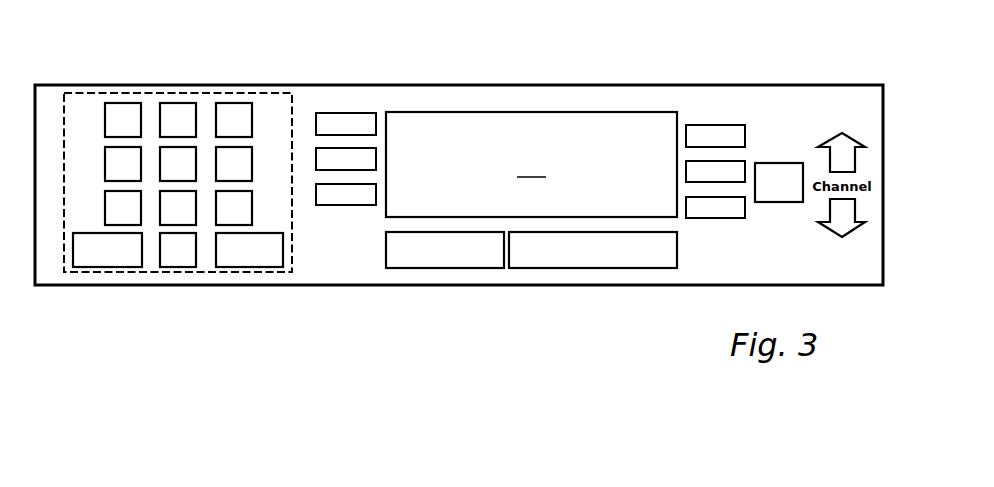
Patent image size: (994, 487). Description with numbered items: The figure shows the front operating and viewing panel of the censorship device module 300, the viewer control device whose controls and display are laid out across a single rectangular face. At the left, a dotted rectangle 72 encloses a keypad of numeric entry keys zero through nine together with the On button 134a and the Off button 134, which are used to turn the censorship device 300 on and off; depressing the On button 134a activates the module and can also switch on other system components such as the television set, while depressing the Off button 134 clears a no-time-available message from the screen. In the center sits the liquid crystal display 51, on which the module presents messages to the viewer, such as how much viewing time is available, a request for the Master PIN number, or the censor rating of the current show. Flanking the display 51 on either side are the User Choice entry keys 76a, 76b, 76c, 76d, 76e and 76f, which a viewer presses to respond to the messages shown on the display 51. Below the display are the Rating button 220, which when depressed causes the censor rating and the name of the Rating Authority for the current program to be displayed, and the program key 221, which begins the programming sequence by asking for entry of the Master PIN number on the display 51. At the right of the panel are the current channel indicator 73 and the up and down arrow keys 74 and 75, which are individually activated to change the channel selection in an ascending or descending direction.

The censorship device module 300 is at (542, 84).
The dotted rectangle 72 is at (150, 94).
The On button 134a is at (110, 262).
The Off button 134 is at (250, 260).
The User Choice entry key 76a is at (346, 124).
The User Choice entry key 76b is at (346, 159).
The User Choice entry key 76c is at (346, 194).
The User Choice entry key 76d is at (715, 136).
The User Choice entry key 76e is at (715, 171).
The User Choice entry key 76f is at (715, 207).
The liquid crystal display 51 is at (531, 164).
The Rating Button 220 is at (430, 260).
The program key 221 is at (557, 260).
The current channel indicator 73 is at (780, 165).
The up arrow key 74 is at (842, 162).
The down arrow key 75 is at (842, 227).